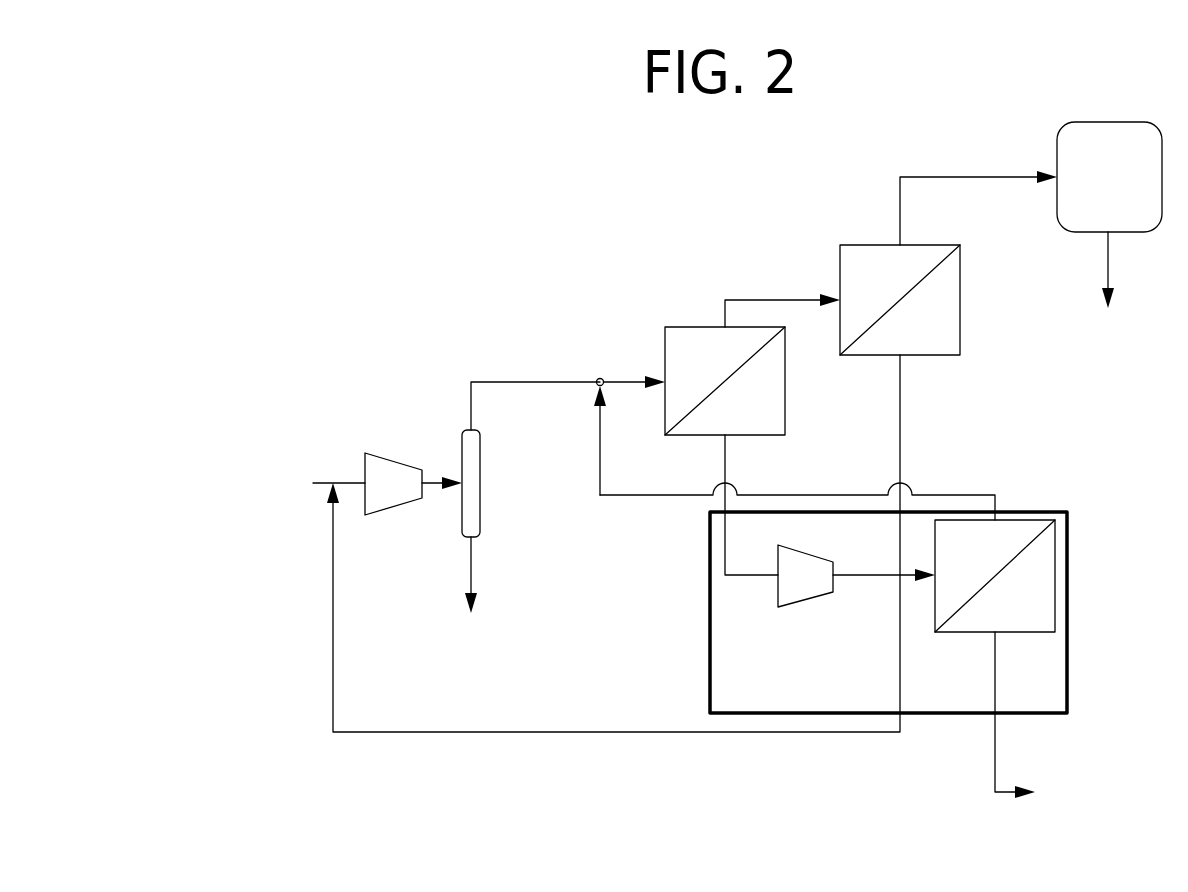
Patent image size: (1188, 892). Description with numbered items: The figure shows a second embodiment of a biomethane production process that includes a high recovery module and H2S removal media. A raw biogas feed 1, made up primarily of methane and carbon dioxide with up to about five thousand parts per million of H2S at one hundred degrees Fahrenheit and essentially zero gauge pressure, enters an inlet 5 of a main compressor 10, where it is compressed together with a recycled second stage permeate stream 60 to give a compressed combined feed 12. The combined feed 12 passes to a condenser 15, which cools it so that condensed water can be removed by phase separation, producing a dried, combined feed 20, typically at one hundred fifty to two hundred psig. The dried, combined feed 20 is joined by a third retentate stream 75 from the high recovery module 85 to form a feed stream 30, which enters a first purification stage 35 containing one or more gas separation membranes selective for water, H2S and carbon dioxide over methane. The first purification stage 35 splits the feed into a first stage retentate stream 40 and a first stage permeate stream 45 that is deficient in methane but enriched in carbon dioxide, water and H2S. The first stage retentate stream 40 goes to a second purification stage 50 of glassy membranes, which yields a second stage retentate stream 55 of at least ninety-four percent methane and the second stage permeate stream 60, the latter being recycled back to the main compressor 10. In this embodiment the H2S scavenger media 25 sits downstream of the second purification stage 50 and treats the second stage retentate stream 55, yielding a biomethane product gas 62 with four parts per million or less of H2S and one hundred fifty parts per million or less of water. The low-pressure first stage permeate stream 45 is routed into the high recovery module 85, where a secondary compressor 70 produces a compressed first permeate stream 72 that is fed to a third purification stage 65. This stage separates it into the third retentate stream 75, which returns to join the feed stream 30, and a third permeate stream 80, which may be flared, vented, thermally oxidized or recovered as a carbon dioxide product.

The raw biogas feed 1 is at (224, 531).
The inlet 5 is at (349, 483).
The main compressor 10 is at (400, 505).
The compressed combined feed 12 is at (432, 488).
The condenser 15 is at (480, 483).
The dried, combined feed 20 is at (469, 402).
The H2S scavenger media 25 is at (1108, 122).
The feed stream 30 is at (601, 377).
The first purification stage 35 is at (786, 382).
The first stage retentate stream 40 is at (775, 300).
The first stage permeate stream 45 is at (728, 450).
The second purification stage 50 is at (961, 300).
The second stage retentate stream 55 is at (978, 177).
The second stage permeate stream 60 is at (901, 405).
The biomethane product gas 62 is at (1110, 260).
The third purification stage 65 is at (1026, 633).
The secondary compressor 70 is at (806, 553).
The compressed first permeate stream 72 is at (873, 577).
The third retentate stream 75 is at (971, 495).
The third permeate stream 80 is at (994, 770).
The high recovery module 85 is at (1069, 650).